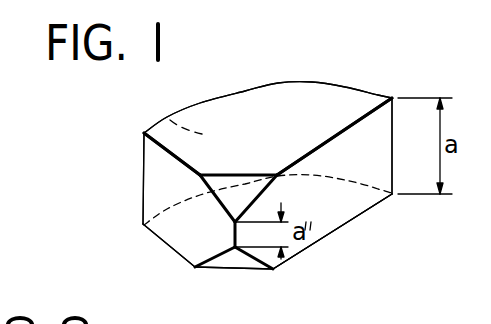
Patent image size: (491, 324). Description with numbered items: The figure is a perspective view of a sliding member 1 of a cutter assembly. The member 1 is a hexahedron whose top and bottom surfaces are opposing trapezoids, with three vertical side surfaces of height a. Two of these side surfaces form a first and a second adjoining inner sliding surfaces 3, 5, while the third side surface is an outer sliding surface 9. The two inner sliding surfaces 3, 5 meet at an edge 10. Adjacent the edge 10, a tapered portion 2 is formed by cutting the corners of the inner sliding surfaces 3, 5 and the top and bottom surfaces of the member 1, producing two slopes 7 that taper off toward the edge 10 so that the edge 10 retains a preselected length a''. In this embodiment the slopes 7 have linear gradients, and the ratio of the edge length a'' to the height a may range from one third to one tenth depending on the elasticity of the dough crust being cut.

The sliding member 1 is at (353, 76).
The tapered portion 2 is at (193, 233).
The first inner sliding surface 3 is at (332, 207).
The second inner sliding surface 5 is at (153, 188).
The slopes 7 is at (247, 212).
The outer sliding surface 9 is at (167, 118).
The edge 10 is at (235, 231).